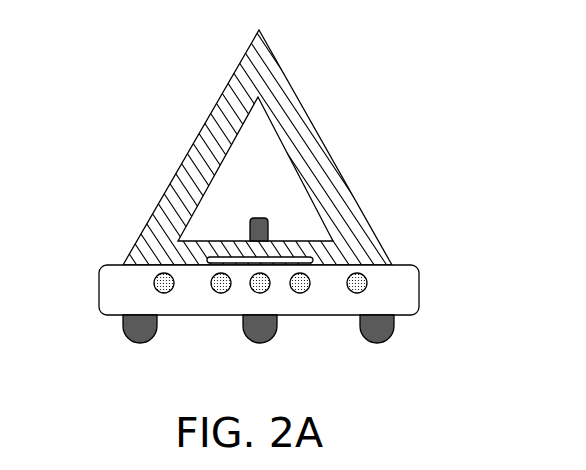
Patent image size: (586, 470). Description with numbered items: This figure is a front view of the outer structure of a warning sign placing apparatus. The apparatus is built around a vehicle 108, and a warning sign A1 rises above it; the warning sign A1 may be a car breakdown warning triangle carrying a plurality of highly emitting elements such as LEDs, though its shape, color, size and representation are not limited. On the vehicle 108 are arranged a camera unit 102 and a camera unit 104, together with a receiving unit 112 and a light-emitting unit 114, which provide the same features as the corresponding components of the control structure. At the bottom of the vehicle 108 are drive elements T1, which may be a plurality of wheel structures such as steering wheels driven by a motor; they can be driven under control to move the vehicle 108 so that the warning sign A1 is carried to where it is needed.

The warning sign A1 is at (257, 70).
The camera unit 102 is at (158, 275).
The camera unit 104 is at (361, 275).
The vehicle 108 is at (408, 289).
The receiving unit 112 is at (258, 218).
The light-emitting unit 114 is at (256, 258).
The drive elements T1 is at (370, 343).